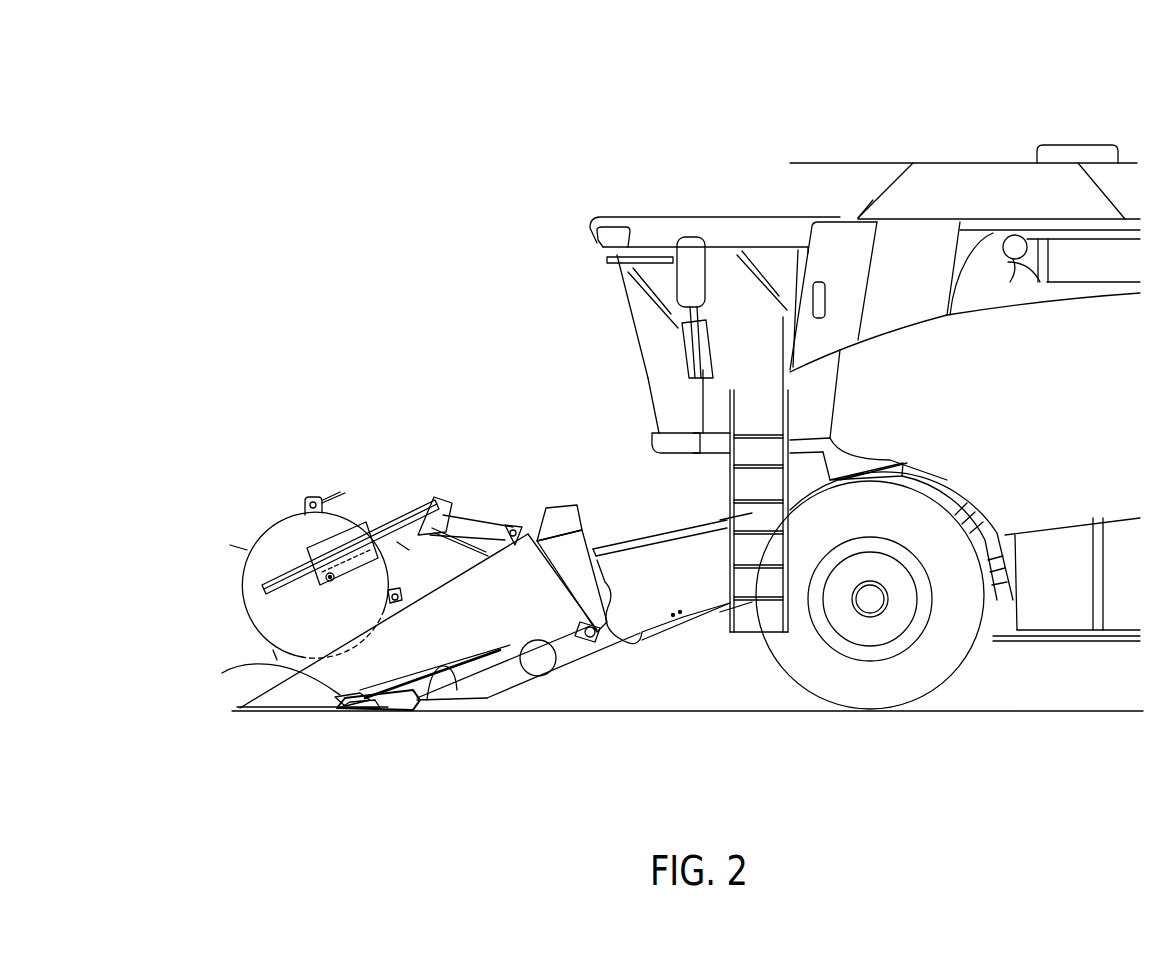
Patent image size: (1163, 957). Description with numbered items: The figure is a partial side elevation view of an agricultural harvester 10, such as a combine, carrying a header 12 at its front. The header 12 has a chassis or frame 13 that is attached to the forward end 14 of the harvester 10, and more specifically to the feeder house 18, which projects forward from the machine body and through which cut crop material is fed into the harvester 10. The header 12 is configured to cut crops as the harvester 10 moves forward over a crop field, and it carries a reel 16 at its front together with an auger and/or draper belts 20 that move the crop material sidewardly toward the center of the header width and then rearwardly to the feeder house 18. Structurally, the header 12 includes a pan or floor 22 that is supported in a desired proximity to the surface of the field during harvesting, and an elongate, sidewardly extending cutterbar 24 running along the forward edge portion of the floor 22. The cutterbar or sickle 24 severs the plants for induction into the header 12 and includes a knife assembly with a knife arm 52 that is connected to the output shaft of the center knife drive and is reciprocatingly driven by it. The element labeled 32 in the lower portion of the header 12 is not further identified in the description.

The agricultural harvester 10 is at (865, 375).
The header 12 is at (416, 616).
The pivot 13 is at (547, 592).
The hydraulic cylinder 14 is at (560, 506).
The reel 16 is at (313, 500).
The feeder housing 18 is at (623, 548).
The cutter bar 20 is at (447, 666).
The skid shoe 22 is at (313, 741).
The skid shoe sensor 24 is at (360, 704).
The sensor arm 32 is at (383, 692).
The height sensor 52 is at (362, 693).